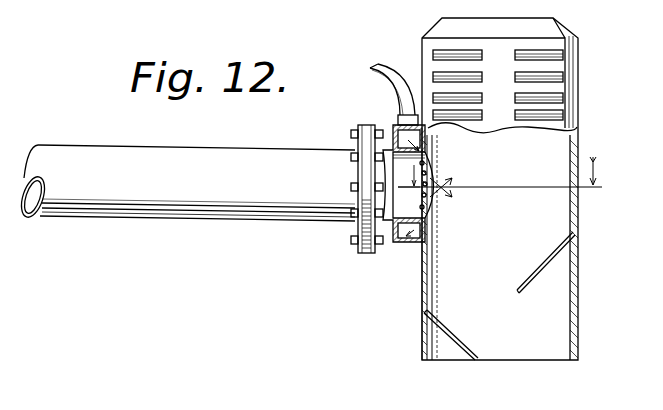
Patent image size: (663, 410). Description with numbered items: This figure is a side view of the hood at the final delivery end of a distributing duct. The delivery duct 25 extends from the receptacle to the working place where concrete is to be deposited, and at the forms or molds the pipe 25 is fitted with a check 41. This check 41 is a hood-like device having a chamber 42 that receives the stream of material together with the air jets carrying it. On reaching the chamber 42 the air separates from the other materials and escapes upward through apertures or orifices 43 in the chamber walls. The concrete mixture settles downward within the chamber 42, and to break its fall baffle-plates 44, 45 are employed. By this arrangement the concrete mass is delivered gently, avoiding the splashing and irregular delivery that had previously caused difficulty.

The delivery duct 25 is at (200, 147).
The check 41 is at (517, 189).
The chamber 42 is at (500, 202).
The apertures 43 is at (566, 86).
The baffle-plate 44 is at (550, 268).
The baffle-plate 45 is at (456, 341).